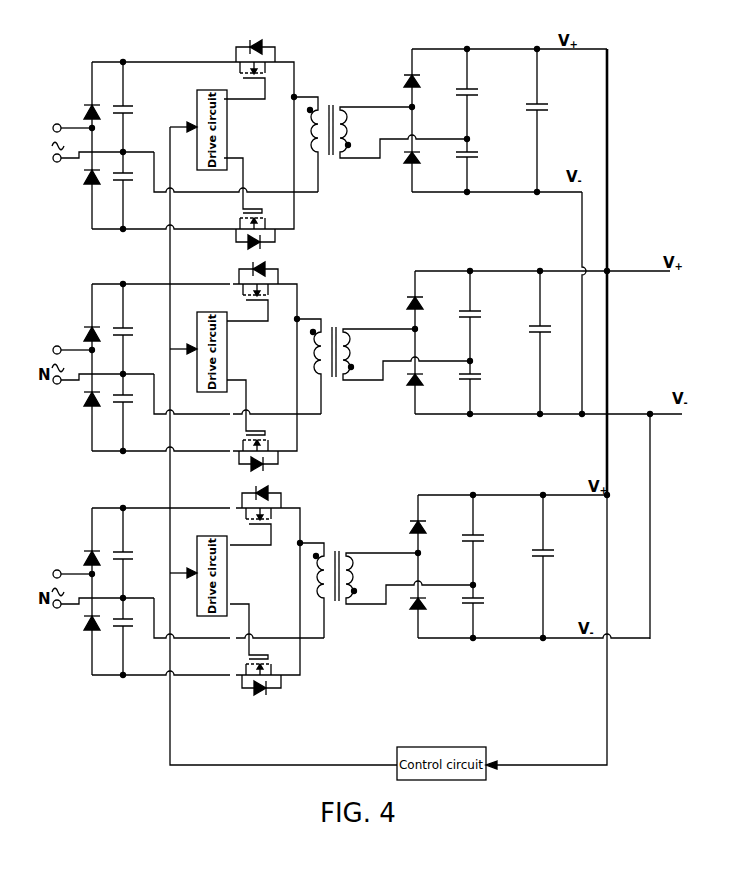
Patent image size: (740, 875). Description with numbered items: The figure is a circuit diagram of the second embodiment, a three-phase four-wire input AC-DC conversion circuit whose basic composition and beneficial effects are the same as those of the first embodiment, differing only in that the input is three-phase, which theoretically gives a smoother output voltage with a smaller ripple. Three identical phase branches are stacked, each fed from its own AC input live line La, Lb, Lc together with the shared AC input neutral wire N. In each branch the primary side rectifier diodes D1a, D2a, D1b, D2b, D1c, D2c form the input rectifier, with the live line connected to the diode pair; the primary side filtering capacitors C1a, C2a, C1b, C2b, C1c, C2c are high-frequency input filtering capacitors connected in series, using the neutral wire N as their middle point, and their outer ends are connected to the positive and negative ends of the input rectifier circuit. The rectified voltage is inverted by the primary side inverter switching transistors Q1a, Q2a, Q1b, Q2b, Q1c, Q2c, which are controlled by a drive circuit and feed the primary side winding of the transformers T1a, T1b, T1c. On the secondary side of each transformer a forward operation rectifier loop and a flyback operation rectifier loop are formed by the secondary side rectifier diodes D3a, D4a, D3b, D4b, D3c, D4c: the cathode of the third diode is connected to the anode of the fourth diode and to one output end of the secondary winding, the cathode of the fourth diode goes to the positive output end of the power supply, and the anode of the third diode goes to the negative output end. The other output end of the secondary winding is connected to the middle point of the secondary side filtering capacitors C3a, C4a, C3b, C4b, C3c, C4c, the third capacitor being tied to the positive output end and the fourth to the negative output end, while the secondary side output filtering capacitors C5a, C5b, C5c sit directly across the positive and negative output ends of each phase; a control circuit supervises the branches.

The primary side rectifier diode D1a is at (81, 109).
The primary side rectifier diode D2a is at (81, 178).
The AC input live line La is at (66, 125).
The AC input neutral wire N is at (96, 152).
The primary side filtering capacitor C1a is at (136, 106).
The primary side filtering capacitor C2a is at (136, 192).
The primary side inverter switching transistor Q1a is at (261, 69).
The primary side inverter switching transistor Q2a is at (261, 203).
The transformer T1a is at (380, 136).
The secondary side rectifier diode D3a is at (400, 161).
The secondary side rectifier diode D4a is at (400, 120).
The secondary side filtering capacitor C3a is at (455, 94).
The secondary side filtering capacitor C4a is at (455, 165).
The secondary side output filtering capacitor C5a is at (524, 120).
The primary side rectifier diode D1b is at (81, 331).
The primary side rectifier diode D2b is at (81, 400).
The AC input live line Lb is at (66, 347).
The primary side filtering capacitor C1b is at (136, 328).
The primary side filtering capacitor C2b is at (136, 414).
The primary side inverter switching transistor Q1b is at (264, 291).
The primary side inverter switching transistor Q2b is at (264, 425).
The transformer T1b is at (383, 358).
The secondary side rectifier diode D3b is at (403, 383).
The secondary side rectifier diode D4b is at (403, 342).
The secondary side filtering capacitor C3b is at (458, 316).
The secondary side filtering capacitor C4b is at (458, 387).
The secondary side output filtering capacitor C5b is at (527, 342).
The primary side rectifier diode D1c is at (81, 555).
The primary side rectifier diode D2c is at (81, 624).
The AC input live line Lc is at (66, 571).
The primary side filtering capacitor C1c is at (136, 552).
The primary side filtering capacitor C2c is at (136, 638).
The primary side inverter switching transistor Q1c is at (267, 515).
The primary side inverter switching transistor Q2c is at (267, 649).
The transformer T1c is at (386, 582).
The secondary side rectifier diode D3c is at (406, 607).
The secondary side rectifier diode D4c is at (406, 566).
The secondary side filtering capacitor C3c is at (461, 540).
The secondary side filtering capacitor C4c is at (461, 611).
The secondary side output filtering capacitor C5c is at (530, 566).